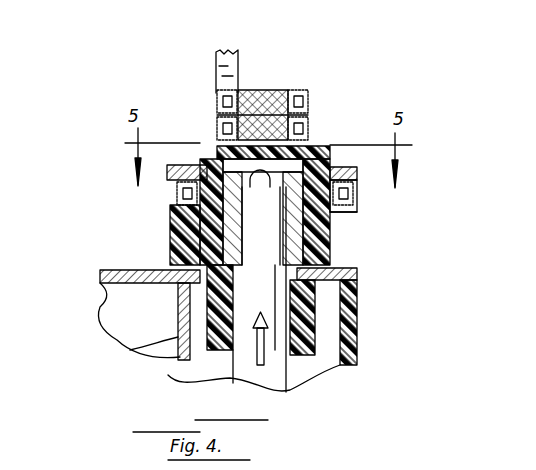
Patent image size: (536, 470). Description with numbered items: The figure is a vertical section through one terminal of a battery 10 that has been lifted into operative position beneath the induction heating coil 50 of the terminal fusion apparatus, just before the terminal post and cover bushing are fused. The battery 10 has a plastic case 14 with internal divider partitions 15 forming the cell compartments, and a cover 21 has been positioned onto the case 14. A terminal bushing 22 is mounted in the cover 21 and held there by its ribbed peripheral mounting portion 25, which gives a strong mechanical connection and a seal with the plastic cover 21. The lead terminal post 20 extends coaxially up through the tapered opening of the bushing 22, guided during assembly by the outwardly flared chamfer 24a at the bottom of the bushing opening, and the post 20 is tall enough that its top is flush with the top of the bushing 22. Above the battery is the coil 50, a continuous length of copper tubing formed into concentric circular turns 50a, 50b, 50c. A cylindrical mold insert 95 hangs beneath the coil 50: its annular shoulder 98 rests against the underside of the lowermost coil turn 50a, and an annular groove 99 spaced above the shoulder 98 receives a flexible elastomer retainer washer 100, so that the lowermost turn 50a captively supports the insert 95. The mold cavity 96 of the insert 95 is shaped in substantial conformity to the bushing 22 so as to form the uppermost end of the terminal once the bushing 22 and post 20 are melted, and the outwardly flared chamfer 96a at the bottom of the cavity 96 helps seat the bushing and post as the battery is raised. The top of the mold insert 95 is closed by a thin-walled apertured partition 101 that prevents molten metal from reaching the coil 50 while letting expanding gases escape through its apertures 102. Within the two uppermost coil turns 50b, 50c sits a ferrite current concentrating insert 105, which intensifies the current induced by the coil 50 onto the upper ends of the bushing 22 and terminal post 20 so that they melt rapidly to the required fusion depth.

The battery 10 is at (372, 302).
The case 14 is at (342, 365).
The divider partitions 15 is at (135, 348).
The terminal post 20 is at (350, 217).
The cover 21 is at (100, 297).
The terminal bushing 22 is at (352, 245).
The chamfer 24a is at (208, 380).
The ribbed peripheral mounting portion 25 is at (185, 318).
The induction heating coil 50 is at (241, 76).
The lowermost coil turn 50a is at (355, 192).
The coil turn 50b is at (307, 122).
The coil turn 50c is at (298, 93).
The mold insert 95 is at (352, 211).
The mold cavity 96 is at (192, 233).
The chamfer 96a is at (182, 258).
The annular shoulder 98 is at (177, 194).
The annular groove 99 is at (189, 167).
The retainer washer 100 is at (170, 173).
The apertured partition 101 is at (208, 167).
The apertures 102 is at (312, 148).
The current concentrating insert 105 is at (263, 90).